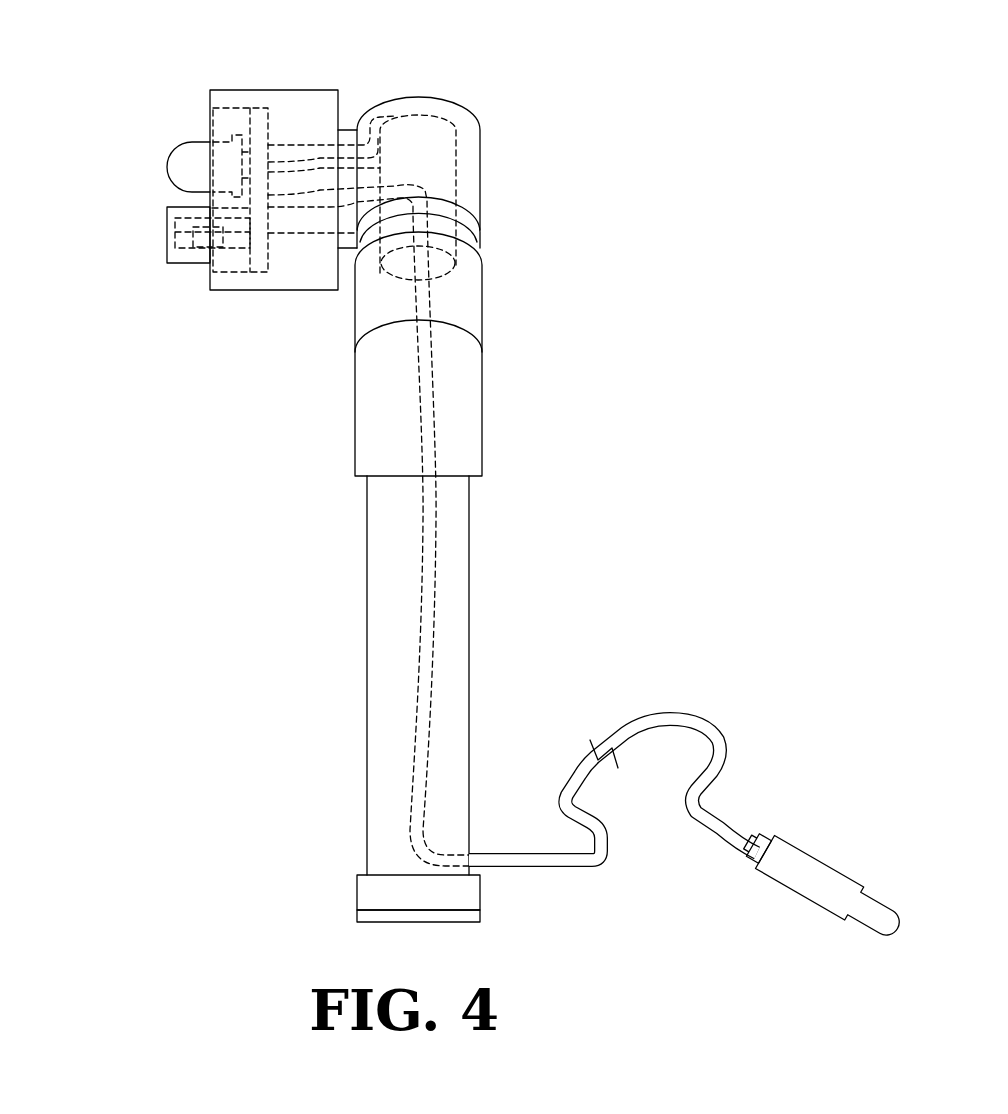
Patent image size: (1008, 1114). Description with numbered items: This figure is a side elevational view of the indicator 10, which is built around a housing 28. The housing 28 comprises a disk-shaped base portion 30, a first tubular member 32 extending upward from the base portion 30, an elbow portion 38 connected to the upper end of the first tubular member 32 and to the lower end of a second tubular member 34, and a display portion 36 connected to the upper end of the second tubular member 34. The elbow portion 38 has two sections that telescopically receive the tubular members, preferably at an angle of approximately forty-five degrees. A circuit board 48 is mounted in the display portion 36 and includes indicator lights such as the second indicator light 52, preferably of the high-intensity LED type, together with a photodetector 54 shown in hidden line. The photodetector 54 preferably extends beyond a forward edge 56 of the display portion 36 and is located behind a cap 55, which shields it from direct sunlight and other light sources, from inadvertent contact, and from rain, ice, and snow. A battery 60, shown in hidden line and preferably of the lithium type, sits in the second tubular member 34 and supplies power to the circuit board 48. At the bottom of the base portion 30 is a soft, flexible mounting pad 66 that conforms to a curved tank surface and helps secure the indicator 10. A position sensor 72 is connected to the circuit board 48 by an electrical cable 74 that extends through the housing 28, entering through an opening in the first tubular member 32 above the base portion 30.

The indicator 10 is at (515, 97).
The housing 28 is at (367, 583).
The base portion 30 is at (357, 878).
The first tubular member 32 is at (469, 642).
The second tubular member 34 is at (464, 233).
The display portion 36 is at (290, 90).
The elbow portion 38 is at (482, 315).
The circuit board 48 is at (260, 265).
The second indicator light 52 is at (180, 163).
The photodetector 54 is at (197, 247).
The cap 55 is at (167, 238).
The forward edge 56 is at (210, 100).
The battery 60 is at (446, 163).
The mounting pad 66 is at (480, 913).
The position sensor 72 is at (807, 860).
The electrical cable 74 is at (423, 683).